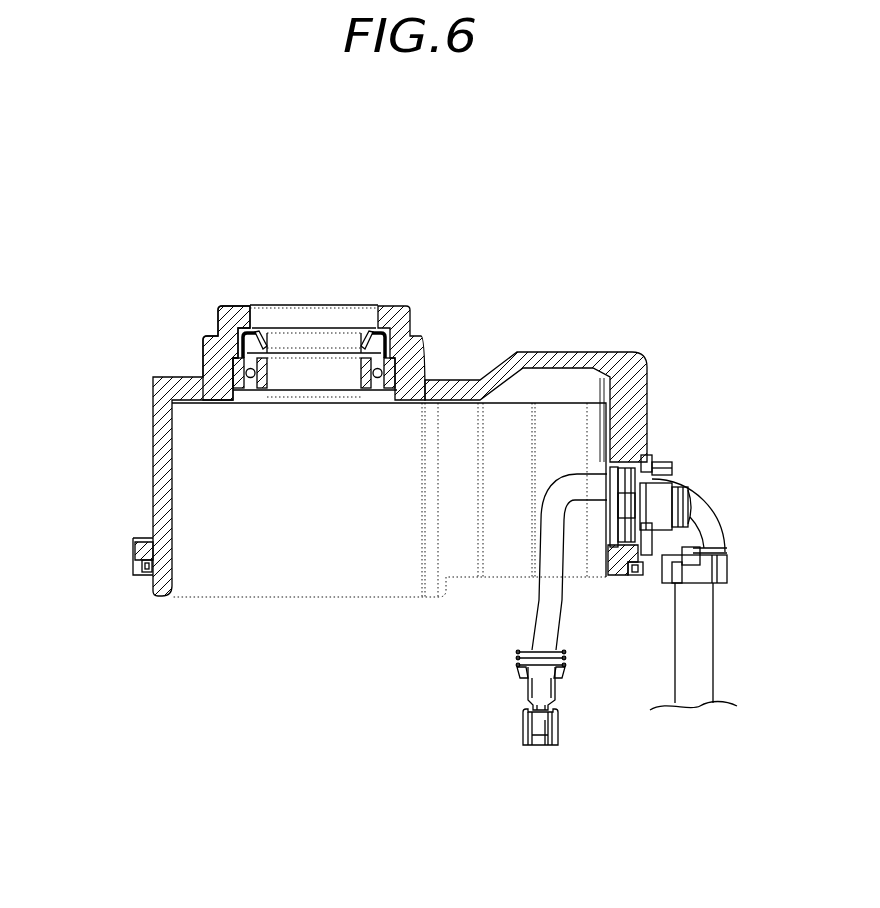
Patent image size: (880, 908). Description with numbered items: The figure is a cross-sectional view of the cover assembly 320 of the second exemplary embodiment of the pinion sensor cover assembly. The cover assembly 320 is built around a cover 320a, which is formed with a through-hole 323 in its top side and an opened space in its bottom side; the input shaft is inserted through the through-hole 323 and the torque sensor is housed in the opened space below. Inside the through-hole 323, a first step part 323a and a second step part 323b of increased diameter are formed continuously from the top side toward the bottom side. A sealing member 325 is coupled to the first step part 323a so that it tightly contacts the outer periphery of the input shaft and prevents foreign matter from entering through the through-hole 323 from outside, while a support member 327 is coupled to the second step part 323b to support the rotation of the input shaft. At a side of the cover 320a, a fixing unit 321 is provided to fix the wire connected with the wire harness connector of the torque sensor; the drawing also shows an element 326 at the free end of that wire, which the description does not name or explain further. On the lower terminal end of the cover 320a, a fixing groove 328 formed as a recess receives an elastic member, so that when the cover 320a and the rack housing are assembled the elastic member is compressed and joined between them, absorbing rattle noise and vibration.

The cover assembly 320 is at (103, 190).
The cover 320a is at (162, 460).
The fixing unit 321 is at (680, 435).
The through-hole 323 is at (250, 298).
The first step part 323a is at (243, 338).
The second step part 323b is at (238, 373).
The sealing member 325 is at (408, 336).
The terminal connector 326 is at (534, 725).
The support member 327 is at (423, 381).
The fixing groove 328 is at (146, 573).